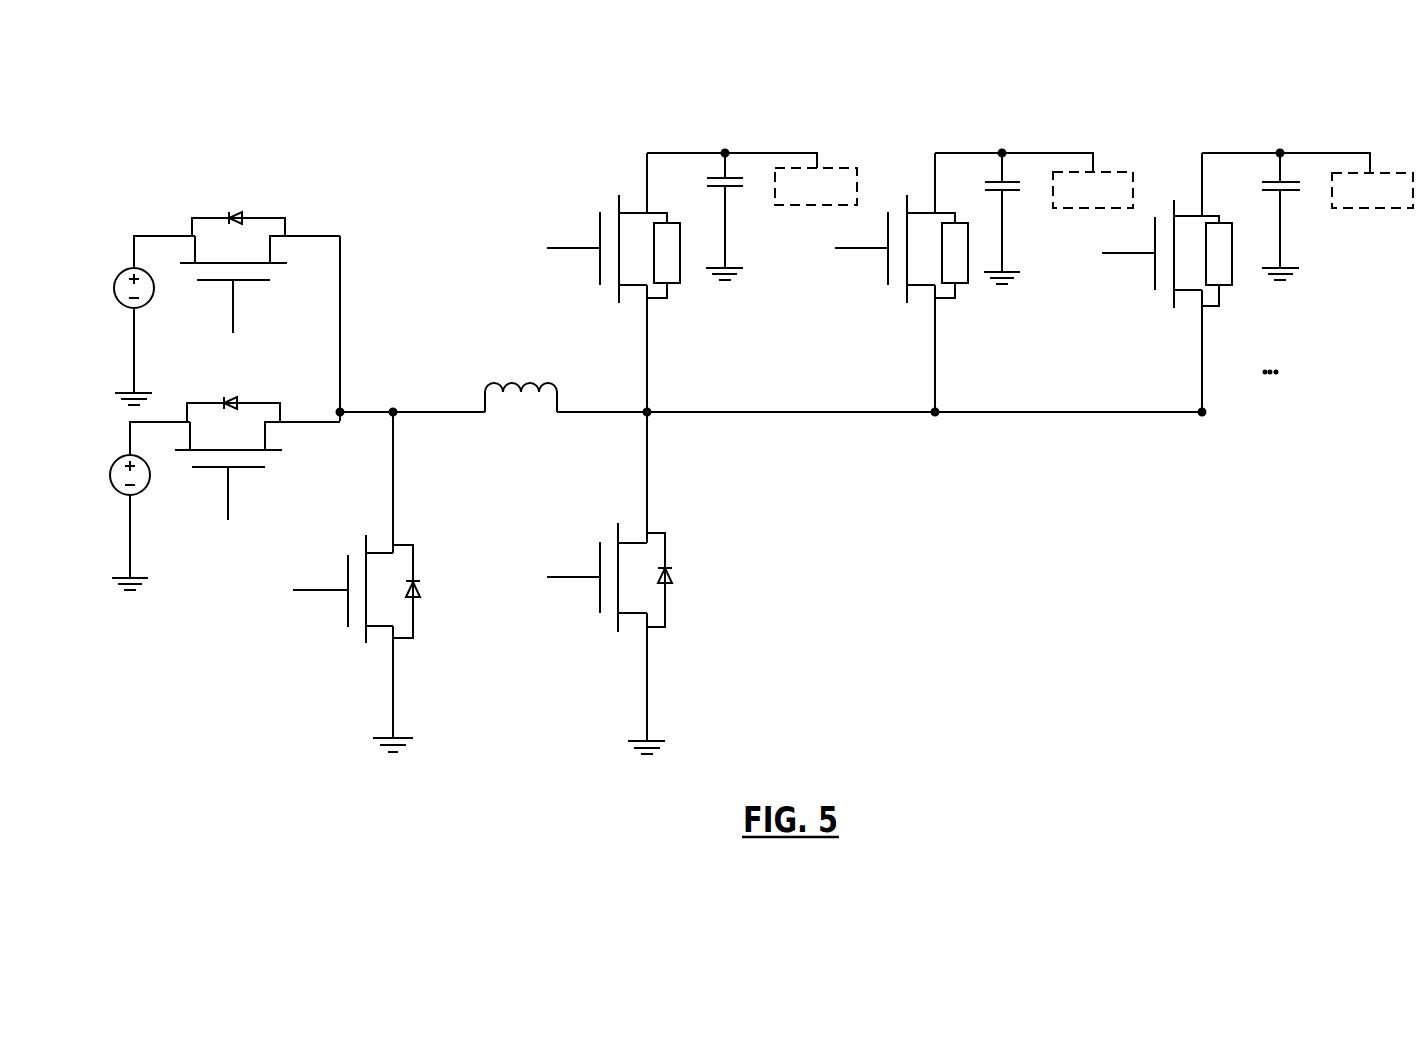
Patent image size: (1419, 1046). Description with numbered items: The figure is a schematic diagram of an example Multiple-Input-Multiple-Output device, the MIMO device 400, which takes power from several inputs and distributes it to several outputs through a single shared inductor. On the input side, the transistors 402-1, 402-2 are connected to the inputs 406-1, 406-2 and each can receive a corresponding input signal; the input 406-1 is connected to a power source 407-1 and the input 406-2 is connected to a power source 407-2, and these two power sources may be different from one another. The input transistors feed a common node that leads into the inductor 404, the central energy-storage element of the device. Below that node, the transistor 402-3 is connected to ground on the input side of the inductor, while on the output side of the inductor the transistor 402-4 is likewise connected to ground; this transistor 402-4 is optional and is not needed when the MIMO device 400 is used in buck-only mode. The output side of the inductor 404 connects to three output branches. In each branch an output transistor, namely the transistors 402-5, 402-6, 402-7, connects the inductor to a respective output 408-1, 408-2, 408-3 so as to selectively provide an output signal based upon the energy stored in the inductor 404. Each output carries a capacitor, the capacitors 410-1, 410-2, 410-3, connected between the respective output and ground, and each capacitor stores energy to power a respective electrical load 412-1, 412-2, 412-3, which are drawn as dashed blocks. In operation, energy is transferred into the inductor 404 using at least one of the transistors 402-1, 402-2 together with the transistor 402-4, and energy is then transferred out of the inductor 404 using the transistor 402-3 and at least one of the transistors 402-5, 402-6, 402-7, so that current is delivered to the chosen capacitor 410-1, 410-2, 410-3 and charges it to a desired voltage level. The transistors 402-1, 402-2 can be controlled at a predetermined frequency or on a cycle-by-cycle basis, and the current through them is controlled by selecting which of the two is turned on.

The MIMO device 400 is at (430, 140).
The transistor 402-1 is at (221, 468).
The transistor 402-2 is at (226, 281).
The transistor 402-3 is at (348, 617).
The transistor 402-4 is at (600, 555).
The transistor 402-5 is at (600, 224).
The transistor 402-6 is at (888, 275).
The transistor 402-7 is at (1155, 282).
The inductor 404 is at (520, 385).
The input 406-1 is at (128, 440).
The input 406-2 is at (142, 236).
The power source 407-1 is at (125, 497).
The power source 407-2 is at (128, 312).
The output 408-1 is at (797, 153).
The output 408-2 is at (1074, 153).
The output 408-3 is at (1346, 155).
The capacitor 410-1 is at (712, 177).
The capacitor 410-2 is at (990, 182).
The capacitor 410-3 is at (1271, 181).
The electrical load 412-1 is at (836, 168).
The electrical load 412-2 is at (1111, 172).
The electrical load 412-3 is at (1372, 208).